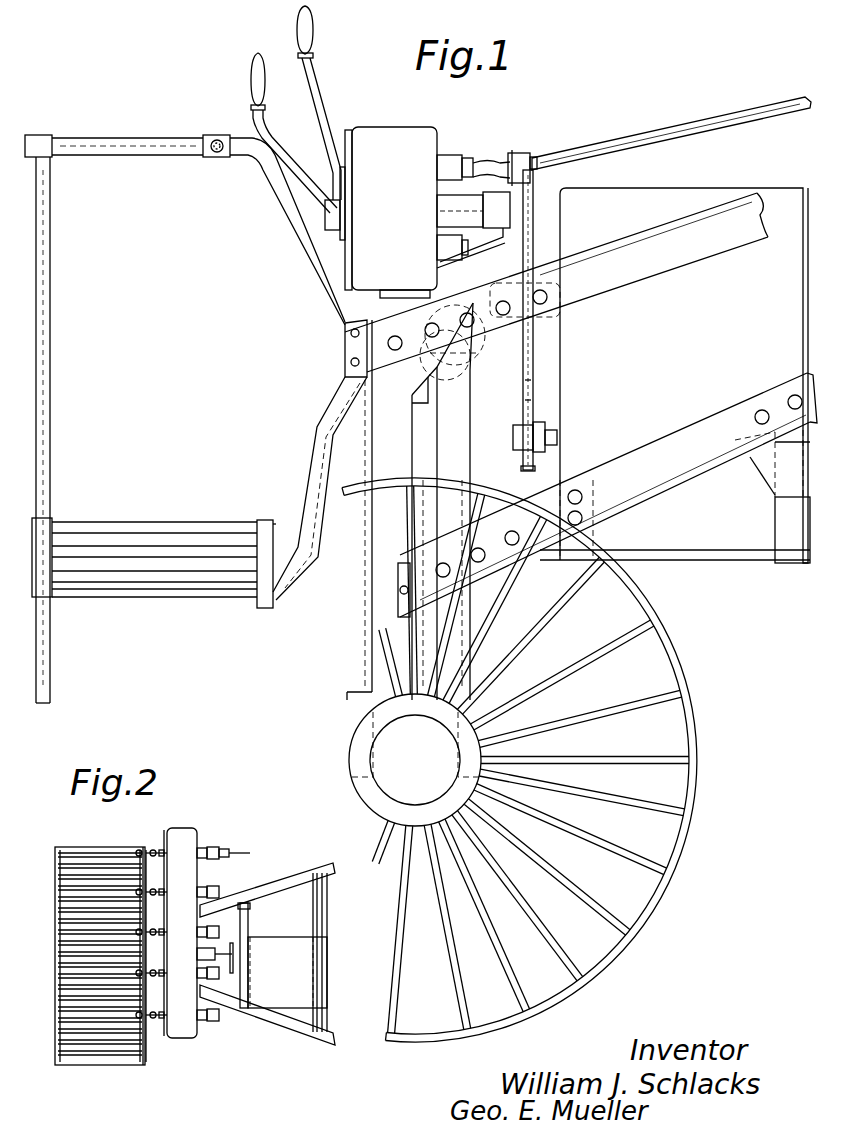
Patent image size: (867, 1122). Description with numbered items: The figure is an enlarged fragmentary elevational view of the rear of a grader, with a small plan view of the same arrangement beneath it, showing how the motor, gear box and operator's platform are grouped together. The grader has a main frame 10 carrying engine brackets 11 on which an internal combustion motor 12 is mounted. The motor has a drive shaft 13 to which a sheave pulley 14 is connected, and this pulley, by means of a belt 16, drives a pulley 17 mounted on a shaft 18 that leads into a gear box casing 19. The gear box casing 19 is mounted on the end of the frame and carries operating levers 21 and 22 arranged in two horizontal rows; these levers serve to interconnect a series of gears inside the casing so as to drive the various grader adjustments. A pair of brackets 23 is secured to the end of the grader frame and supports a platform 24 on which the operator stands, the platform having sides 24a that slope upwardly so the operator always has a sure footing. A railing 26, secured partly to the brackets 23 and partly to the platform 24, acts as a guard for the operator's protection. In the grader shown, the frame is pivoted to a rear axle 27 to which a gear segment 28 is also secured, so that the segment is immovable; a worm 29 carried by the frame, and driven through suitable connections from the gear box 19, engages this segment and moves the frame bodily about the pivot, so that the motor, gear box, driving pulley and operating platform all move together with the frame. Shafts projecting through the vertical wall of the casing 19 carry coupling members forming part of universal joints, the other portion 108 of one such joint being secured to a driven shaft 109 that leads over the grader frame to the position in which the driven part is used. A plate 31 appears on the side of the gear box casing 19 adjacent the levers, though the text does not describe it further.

In FIG. 1, the main frame 10 is at (656, 455).
In FIG. 2, the main frame 10 is at (292, 880).
In FIG. 1, the engine brackets 11 is at (577, 573).
In FIG. 2, the engine brackets 11 is at (250, 917).
In FIG. 1, the internal combustion motor 12 is at (720, 540).
In FIG. 2, the internal combustion motor 12 is at (298, 968).
In FIG. 1, the drive shaft 13 is at (550, 428).
In FIG. 1, the sheave pulley 14 is at (522, 468).
In FIG. 1, the belt 16 is at (523, 397).
In FIG. 1, the pulley 17 is at (538, 188).
In FIG. 1, the shaft 18 is at (463, 203).
In FIG. 2, the shaft 18 is at (205, 956).
In FIG. 1, the gear box casing 19 is at (388, 130).
In FIG. 2, the gear box casing 19 is at (187, 835).
In FIG. 1, the operating lever 21 is at (316, 88).
In FIG. 2, the operating lever 21 is at (154, 1019).
In FIG. 1, the operating lever 22 is at (285, 147).
In FIG. 2, the operating lever 22 is at (142, 1020).
In FIG. 1, the brackets 23 is at (318, 421).
In FIG. 1, the platform 24 is at (262, 606).
In FIG. 2, the platform 24 is at (140, 845).
In FIG. 1, the sloping sides 24a is at (262, 520).
In FIG. 2, the sloping sides 24a is at (108, 1052).
In FIG. 1, the railing 26 is at (50, 378).
In FIG. 1, the rear axle 27 is at (470, 790).
In FIG. 1, the gear segment 28 is at (472, 416).
In FIG. 1, the worm 29 is at (481, 345).
In FIG. 1, the plate 31 is at (348, 128).
In FIG. 2, the plate 31 is at (158, 838).
In FIG. 1, the universal joint portion 108 is at (515, 153).
In FIG. 1, the driven shaft 109 is at (664, 132).